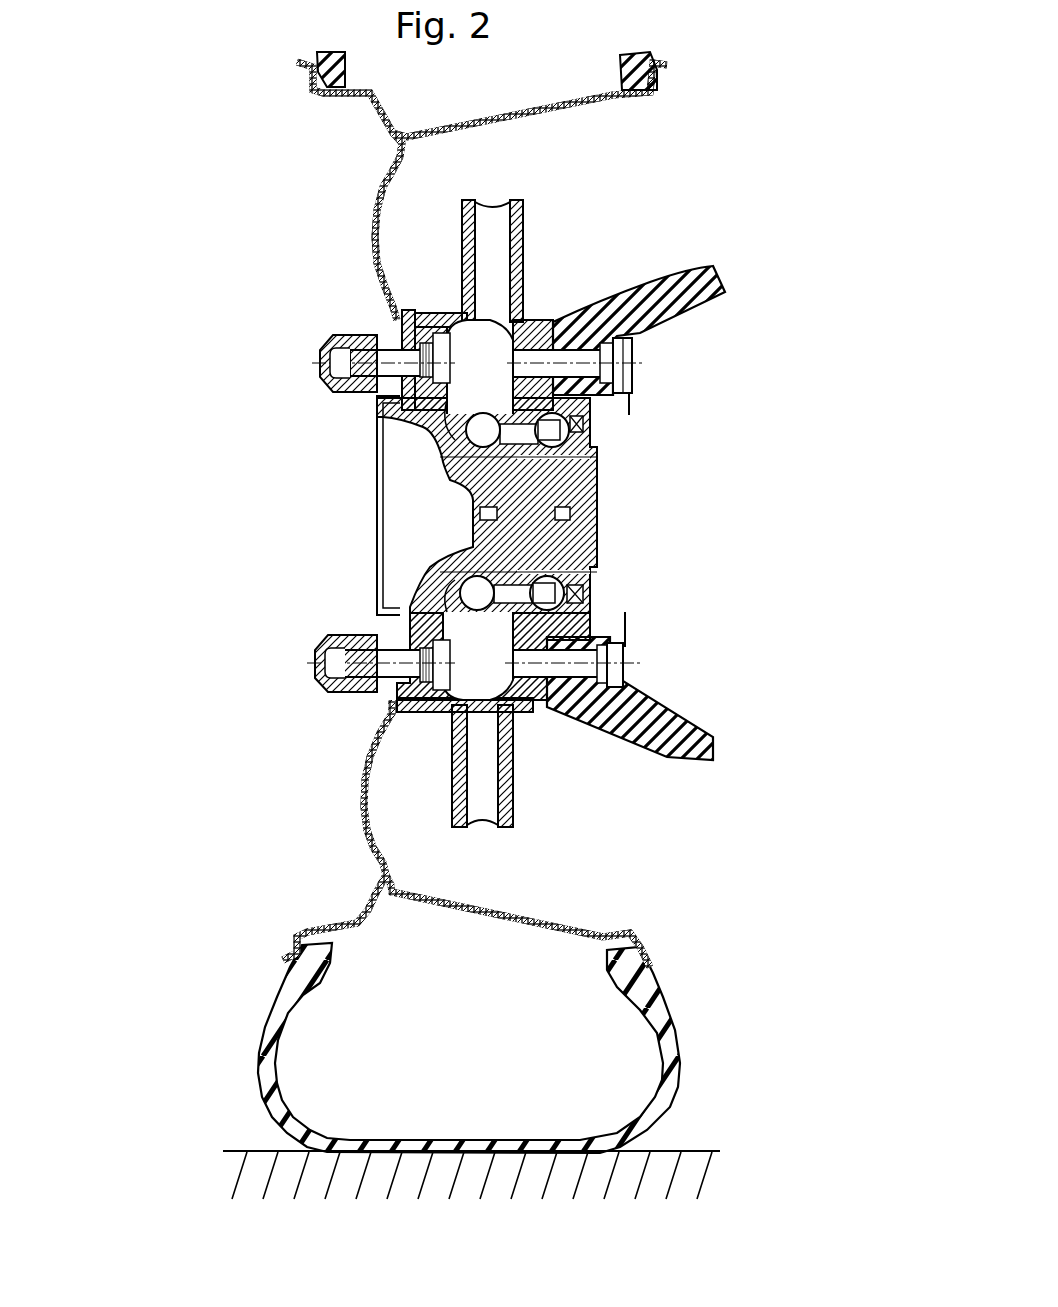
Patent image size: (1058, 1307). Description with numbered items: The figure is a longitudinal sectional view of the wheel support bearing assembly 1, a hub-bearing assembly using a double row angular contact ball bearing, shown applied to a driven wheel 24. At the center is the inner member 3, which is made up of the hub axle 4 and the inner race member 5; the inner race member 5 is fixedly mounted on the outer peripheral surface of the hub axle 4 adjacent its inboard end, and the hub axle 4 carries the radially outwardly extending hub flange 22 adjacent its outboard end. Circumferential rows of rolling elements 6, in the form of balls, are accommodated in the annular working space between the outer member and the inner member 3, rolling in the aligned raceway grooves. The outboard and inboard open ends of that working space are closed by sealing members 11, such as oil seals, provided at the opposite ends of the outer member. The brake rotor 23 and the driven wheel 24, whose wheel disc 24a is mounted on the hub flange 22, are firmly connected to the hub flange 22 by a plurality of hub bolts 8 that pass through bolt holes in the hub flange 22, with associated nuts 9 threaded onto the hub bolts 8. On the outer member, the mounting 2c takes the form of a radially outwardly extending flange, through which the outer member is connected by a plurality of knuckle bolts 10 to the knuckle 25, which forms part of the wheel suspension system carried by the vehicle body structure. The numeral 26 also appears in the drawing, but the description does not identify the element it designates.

The wheel support bearing assembly 1 is at (368, 432).
The mounting 2c is at (545, 323).
The inner member 3 is at (426, 549).
The hub axle 4 is at (450, 450).
The inner race member 5 is at (500, 497).
The rolling elements 6 is at (480, 425).
The hub bolts 8 is at (373, 357).
The nuts 9 is at (323, 350).
The knuckle bolts 10 is at (630, 363).
The sealing members 11 is at (450, 407).
The hub flange 22 is at (420, 318).
The brake rotor 23 is at (523, 232).
The driven wheel 24 is at (266, 984).
The wheel disc 24a is at (377, 193).
The knuckle 25 is at (665, 275).
The recess 26 is at (500, 403).